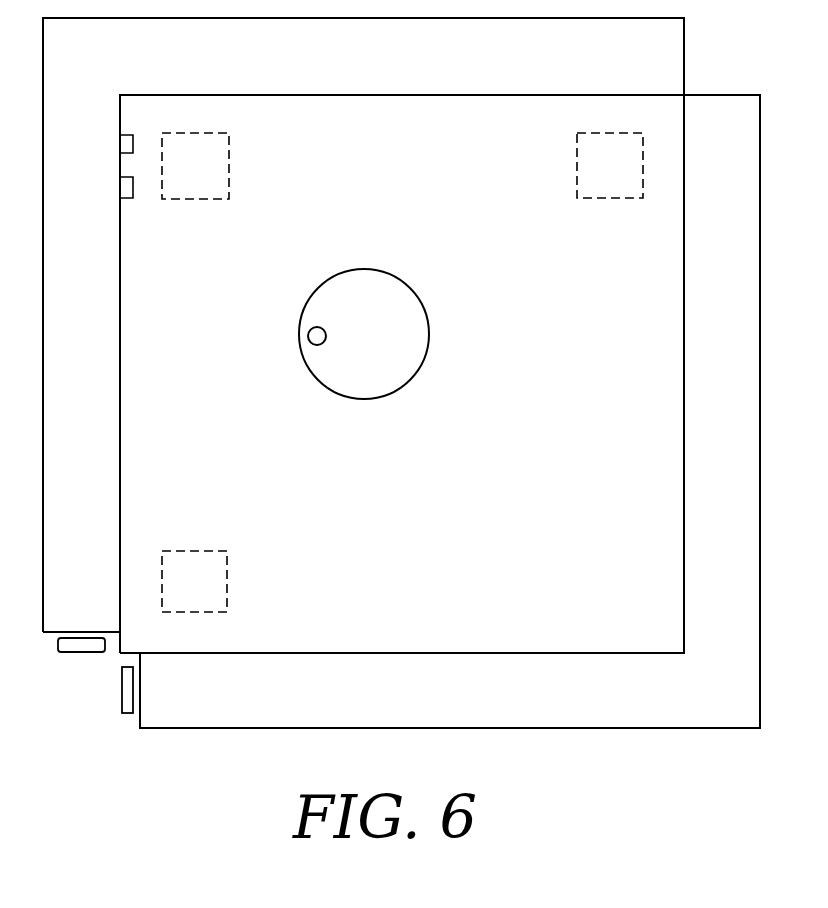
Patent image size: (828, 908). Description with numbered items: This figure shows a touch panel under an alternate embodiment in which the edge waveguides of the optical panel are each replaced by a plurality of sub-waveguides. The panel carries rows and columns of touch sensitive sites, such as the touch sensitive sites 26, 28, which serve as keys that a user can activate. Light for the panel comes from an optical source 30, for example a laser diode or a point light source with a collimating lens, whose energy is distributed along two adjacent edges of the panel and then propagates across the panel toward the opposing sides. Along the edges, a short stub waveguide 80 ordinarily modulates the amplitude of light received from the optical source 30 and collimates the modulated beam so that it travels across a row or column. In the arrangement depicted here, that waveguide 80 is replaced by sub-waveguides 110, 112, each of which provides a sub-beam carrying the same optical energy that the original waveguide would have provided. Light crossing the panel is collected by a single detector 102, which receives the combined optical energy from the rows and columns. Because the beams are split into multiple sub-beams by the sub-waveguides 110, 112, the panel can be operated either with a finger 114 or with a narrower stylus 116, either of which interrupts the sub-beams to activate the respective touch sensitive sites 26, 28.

The touch sensitive site 26 is at (227, 582).
The touch sensitive site 28 is at (577, 163).
The optical source 30 is at (70, 655).
The waveguide 80 is at (157, 207).
The detector 102 is at (122, 705).
The sub-waveguide 110 is at (134, 166).
The sub-waveguide 112 is at (134, 166).
The finger 114 is at (364, 399).
The stylus 116 is at (308, 336).